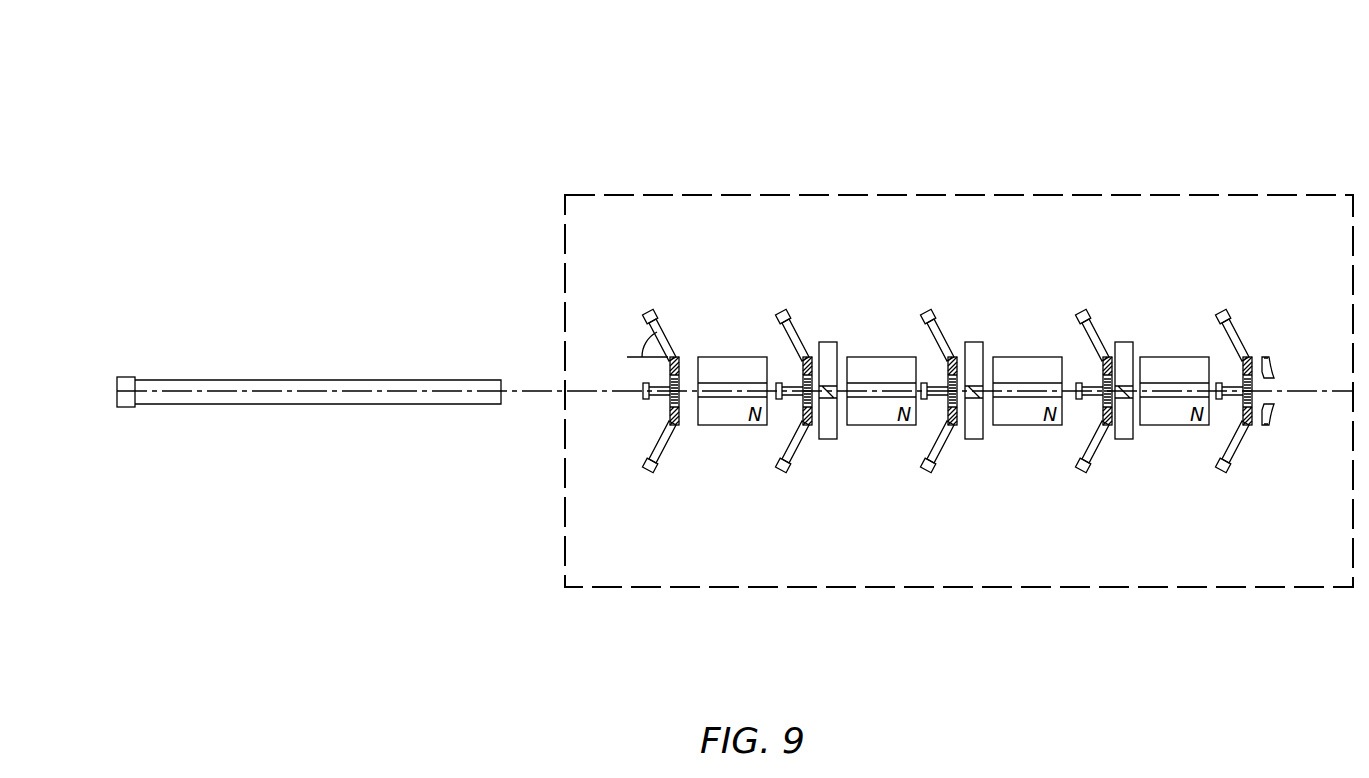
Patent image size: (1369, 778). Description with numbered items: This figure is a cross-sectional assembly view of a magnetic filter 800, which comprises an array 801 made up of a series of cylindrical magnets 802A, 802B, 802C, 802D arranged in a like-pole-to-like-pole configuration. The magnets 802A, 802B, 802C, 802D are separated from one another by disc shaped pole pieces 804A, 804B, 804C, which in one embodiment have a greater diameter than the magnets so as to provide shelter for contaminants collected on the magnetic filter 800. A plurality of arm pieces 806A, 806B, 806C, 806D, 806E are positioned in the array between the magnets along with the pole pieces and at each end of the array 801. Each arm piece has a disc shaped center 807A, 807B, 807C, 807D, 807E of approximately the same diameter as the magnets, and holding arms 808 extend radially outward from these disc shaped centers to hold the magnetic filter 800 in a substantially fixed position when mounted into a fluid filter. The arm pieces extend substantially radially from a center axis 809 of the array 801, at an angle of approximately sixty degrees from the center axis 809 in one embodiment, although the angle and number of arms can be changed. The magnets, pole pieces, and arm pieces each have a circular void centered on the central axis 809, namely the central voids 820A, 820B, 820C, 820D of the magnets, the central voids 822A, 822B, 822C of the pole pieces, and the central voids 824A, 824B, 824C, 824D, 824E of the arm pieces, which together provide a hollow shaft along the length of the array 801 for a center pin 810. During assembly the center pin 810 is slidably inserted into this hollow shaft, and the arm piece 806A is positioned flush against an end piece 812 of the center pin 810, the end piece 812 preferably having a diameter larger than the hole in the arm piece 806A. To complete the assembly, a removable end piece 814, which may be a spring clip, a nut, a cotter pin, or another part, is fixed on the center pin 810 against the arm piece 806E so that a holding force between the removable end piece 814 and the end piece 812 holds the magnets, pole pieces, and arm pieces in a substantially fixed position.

The magnetic filter 800 is at (703, 125).
The array 801 is at (1192, 588).
The magnet 802A is at (725, 424).
The magnet 802B is at (870, 410).
The magnet 802C is at (1017, 410).
The magnet 802D is at (1164, 410).
The pole piece 804A is at (823, 342).
The pole piece 804B is at (971, 342).
The pole piece 804C is at (1120, 342).
The arm piece 806A is at (668, 472).
The arm piece 806B is at (803, 472).
The arm piece 806C is at (945, 472).
The arm piece 806D is at (1100, 472).
The arm piece 806E is at (1245, 472).
The disc shaped center 807A is at (682, 358).
The disc shaped center 807B is at (800, 358).
The disc shaped center 807C is at (945, 358).
The disc shaped center 807D is at (1100, 358).
The disc shaped center 807E is at (1240, 358).
The holding arm 808 is at (627, 421).
The center axis 809 is at (1307, 391).
The center pin 810 is at (330, 357).
The end piece 812 is at (125, 377).
The removable end piece 814 is at (1290, 423).
The central void 820A is at (717, 398).
The central void 820B is at (880, 357).
The central void 820C is at (1033, 357).
The central void 820D is at (1175, 357).
The central void 822A is at (829, 397).
The central void 822B is at (975, 397).
The central void 822C is at (1125, 397).
The central void 824A is at (660, 398).
The central void 824B is at (800, 405).
The central void 824C is at (940, 403).
The central void 824D is at (1095, 403).
The central void 824E is at (1240, 403).